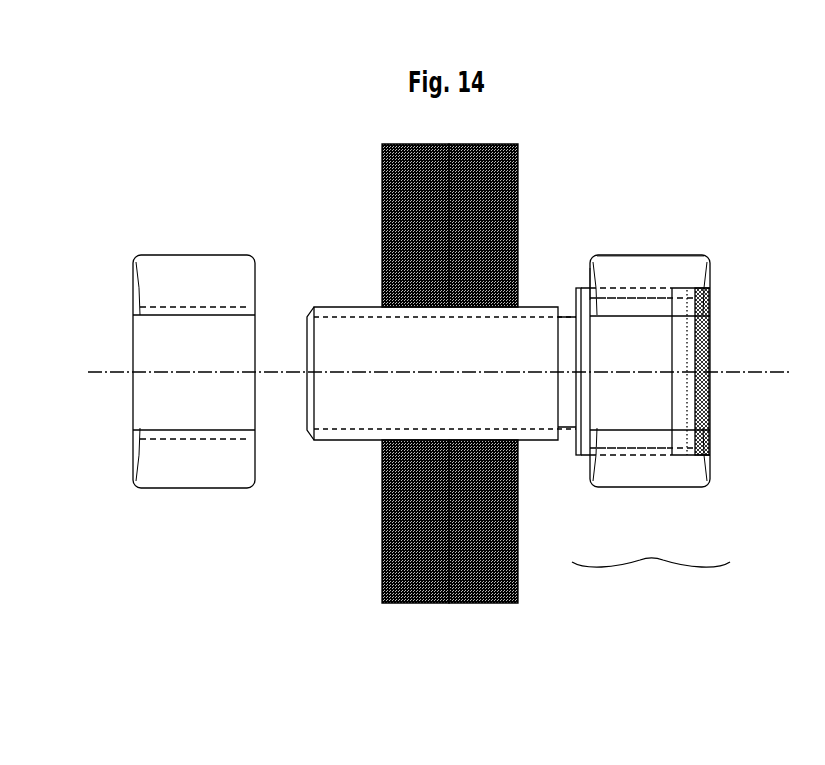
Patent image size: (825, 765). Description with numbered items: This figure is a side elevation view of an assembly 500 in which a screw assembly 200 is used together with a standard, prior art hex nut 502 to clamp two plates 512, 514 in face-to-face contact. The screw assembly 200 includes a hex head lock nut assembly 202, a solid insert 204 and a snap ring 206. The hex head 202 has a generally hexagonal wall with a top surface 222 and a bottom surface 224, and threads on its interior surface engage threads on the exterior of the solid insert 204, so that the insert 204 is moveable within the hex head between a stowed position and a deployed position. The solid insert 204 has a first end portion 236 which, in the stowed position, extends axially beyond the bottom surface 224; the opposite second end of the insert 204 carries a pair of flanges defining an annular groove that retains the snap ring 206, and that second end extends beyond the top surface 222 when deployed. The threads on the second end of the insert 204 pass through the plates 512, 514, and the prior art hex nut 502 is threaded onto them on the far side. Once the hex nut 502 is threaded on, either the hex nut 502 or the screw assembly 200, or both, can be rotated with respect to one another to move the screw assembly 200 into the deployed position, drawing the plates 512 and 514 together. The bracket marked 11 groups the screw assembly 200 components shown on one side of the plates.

The fastener assembly 11 is at (651, 583).
The screw assembly 200 is at (660, 374).
The hex head lock nut assembly 202 is at (635, 270).
The solid insert 204 is at (403, 405).
The snap ring 206 is at (712, 295).
The top surface 222 is at (710, 463).
The bottom surface 224 is at (588, 272).
The first end portion 236 is at (575, 442).
The assembly 500 is at (468, 682).
The prior art hex nut 502 is at (215, 488).
The plate 512 is at (497, 195).
The plate 514 is at (405, 203).